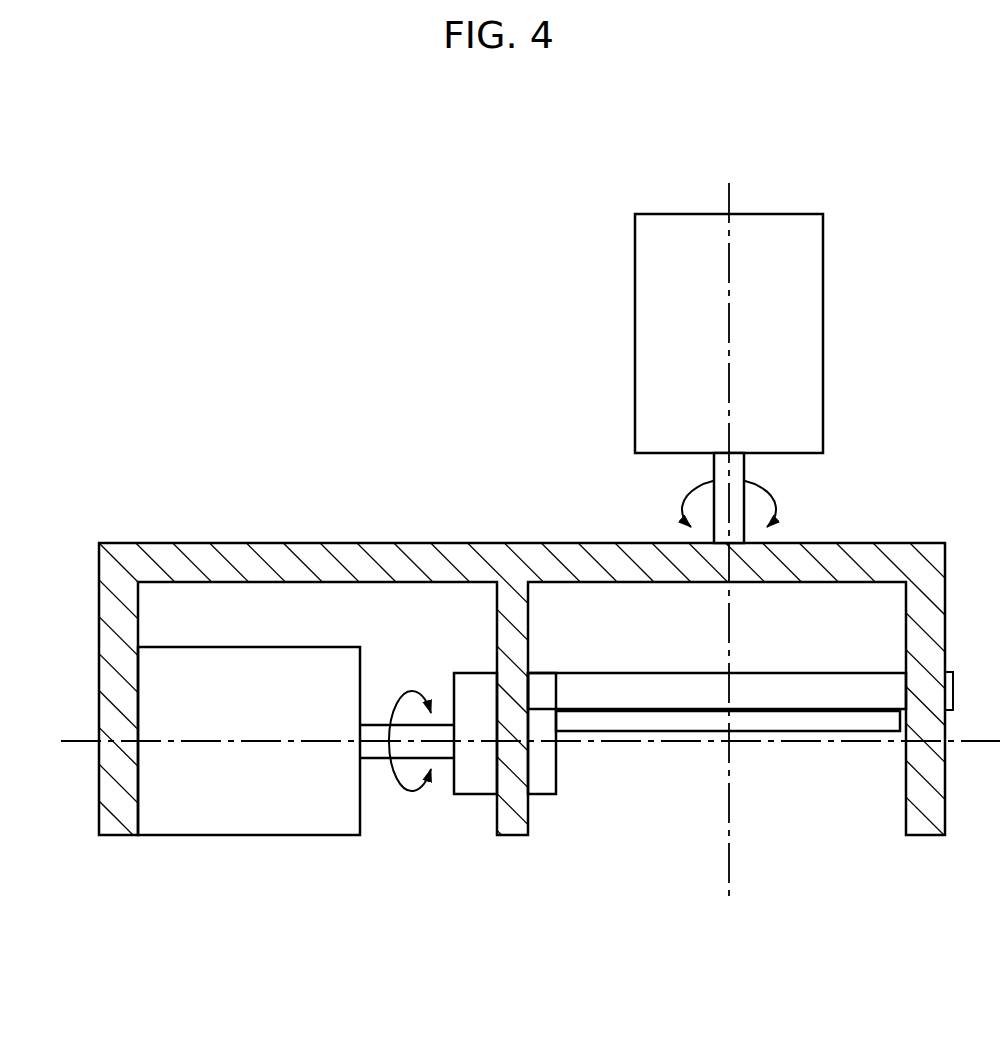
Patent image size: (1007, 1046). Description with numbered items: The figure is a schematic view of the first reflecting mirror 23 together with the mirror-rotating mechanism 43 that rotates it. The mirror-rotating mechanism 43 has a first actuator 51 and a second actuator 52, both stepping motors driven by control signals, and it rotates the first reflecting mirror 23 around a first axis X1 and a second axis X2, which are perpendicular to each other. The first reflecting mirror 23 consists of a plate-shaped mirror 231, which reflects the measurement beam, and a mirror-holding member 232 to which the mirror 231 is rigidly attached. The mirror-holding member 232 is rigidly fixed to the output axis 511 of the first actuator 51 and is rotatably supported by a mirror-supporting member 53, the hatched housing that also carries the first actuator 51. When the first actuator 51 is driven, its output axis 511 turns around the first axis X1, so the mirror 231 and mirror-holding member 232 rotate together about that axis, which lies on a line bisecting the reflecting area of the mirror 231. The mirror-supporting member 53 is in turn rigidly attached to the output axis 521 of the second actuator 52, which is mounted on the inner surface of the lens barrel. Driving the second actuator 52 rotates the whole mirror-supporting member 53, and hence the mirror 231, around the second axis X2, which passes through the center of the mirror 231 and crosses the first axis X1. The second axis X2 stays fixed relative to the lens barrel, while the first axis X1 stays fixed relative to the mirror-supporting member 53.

The mirror-rotating mechanism 43 is at (112, 438).
The mirror-supporting member 53 is at (99, 640).
The first actuator 51 is at (197, 835).
The output axis of the first actuator 511 is at (375, 758).
The first reflecting mirror 23 is at (717, 749).
The mirror-holding member 232 is at (812, 672).
The mirror 231 is at (812, 733).
The second actuator 52 is at (823, 270).
The output axis of the second actuator 521 is at (744, 462).
The first axis X1 is at (252, 740).
The second axis X2 is at (729, 365).